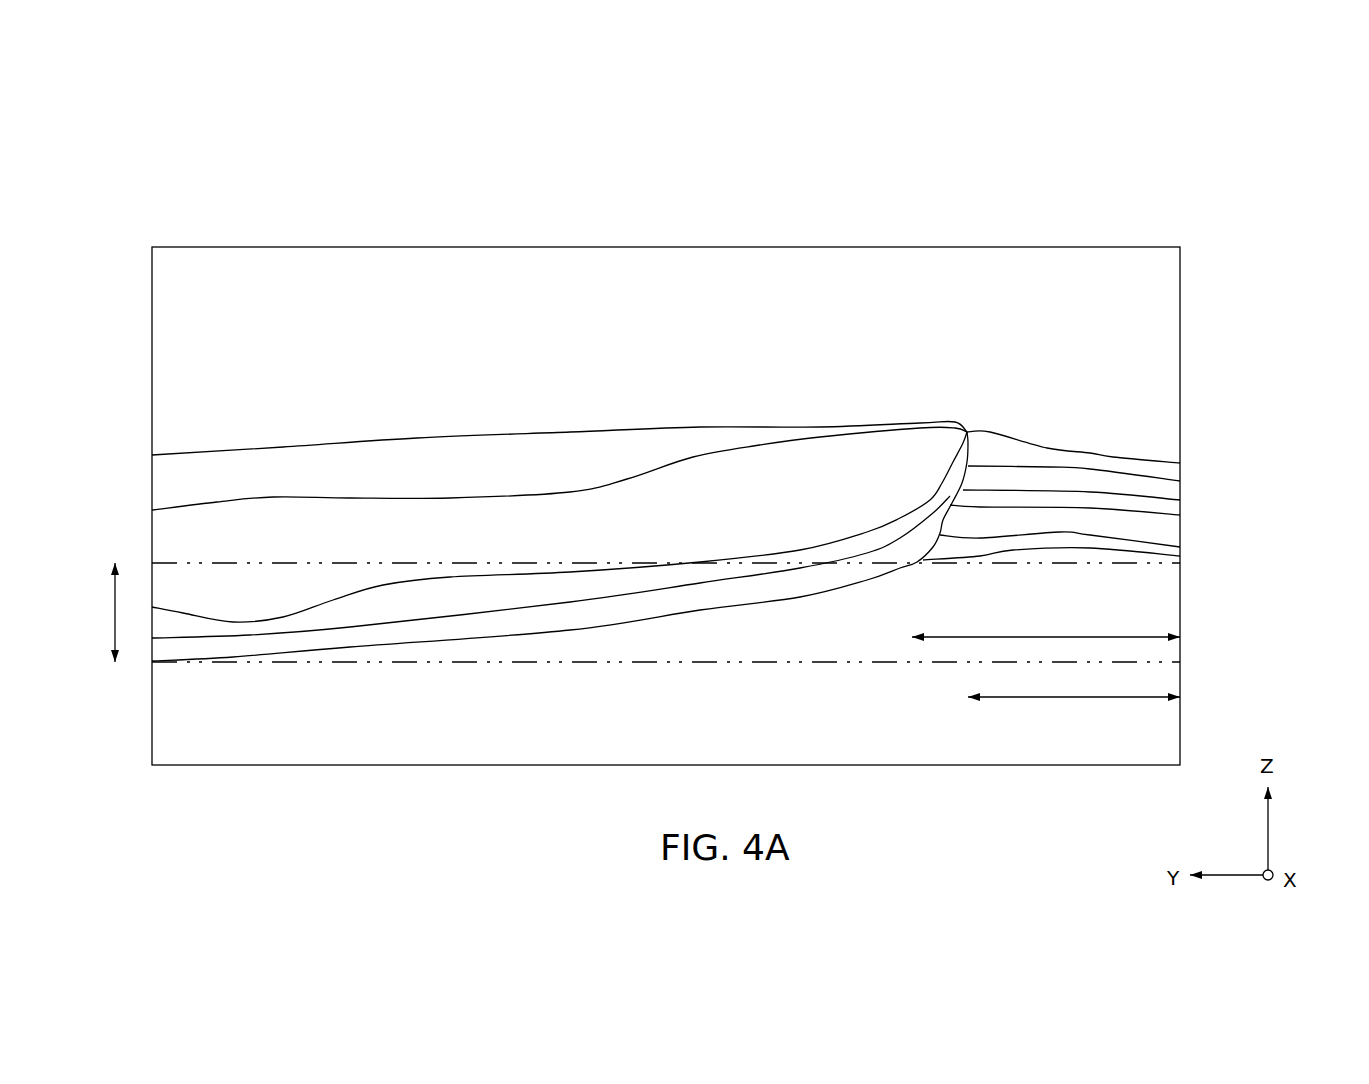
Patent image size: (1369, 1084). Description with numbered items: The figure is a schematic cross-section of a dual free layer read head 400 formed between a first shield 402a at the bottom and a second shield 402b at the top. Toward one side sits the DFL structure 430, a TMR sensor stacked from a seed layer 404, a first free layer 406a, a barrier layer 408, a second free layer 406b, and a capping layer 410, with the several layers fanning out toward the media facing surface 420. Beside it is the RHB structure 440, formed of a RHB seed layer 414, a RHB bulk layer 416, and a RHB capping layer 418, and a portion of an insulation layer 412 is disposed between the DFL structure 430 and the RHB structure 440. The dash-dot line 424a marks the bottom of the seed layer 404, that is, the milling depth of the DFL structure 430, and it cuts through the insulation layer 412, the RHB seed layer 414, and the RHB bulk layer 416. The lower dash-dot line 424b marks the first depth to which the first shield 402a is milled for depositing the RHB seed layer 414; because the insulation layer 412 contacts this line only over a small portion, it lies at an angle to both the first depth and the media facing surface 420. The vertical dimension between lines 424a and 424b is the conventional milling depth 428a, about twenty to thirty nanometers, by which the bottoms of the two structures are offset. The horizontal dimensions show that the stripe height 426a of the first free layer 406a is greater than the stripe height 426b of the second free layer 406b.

The DFL read head 400 is at (208, 155).
The first shield (S1) 402a is at (785, 708).
The second shield (S2) 402b is at (790, 354).
The seed layer 404 is at (1170, 555).
The first free layer (FL) 406a is at (1162, 532).
The second free layer (FL) 406b is at (1168, 500).
The barrier layer 408 is at (1167, 512).
The capping layer 410 is at (1168, 473).
The insulation layer 412 is at (903, 547).
The RHB seed layer 414 is at (830, 548).
The RHB bulk layer 416 is at (690, 523).
The RHB capping layer 418 is at (605, 470).
The media facing surface (MFS) 420 is at (1284, 515).
The line illustrating bottom of seed layer 424a is at (222, 557).
The line illustrating first depth 424b is at (377, 665).
The stripe height of first FL 426a is at (1046, 626).
The stripe height of second FL 426b is at (1074, 686).
The conventional milling depth 428a is at (86, 612).
The DFL structure 430 is at (1103, 445).
The RHB structure 440 is at (486, 410).